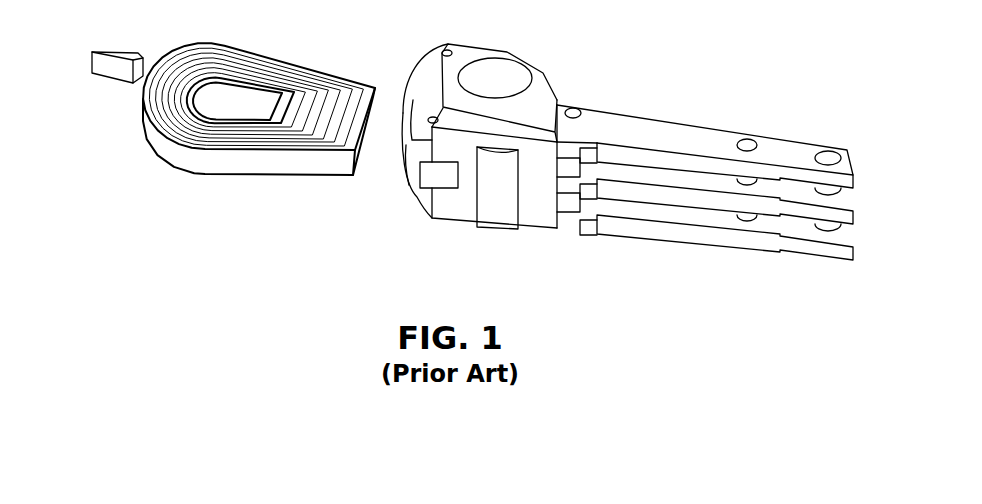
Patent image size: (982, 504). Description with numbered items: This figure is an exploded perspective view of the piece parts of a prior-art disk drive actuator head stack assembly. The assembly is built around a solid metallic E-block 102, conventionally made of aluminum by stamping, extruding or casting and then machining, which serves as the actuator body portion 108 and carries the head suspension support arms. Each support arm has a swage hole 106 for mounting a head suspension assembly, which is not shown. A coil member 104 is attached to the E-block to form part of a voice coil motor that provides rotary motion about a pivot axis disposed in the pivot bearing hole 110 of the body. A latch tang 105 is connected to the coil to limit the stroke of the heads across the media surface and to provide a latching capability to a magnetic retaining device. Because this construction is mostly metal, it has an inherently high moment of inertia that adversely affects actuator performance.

The E-block 102 is at (853, 182).
The coil member 104 is at (245, 58).
The latch tang 105 is at (112, 78).
The swage hole 106 is at (829, 153).
The actuator body portion 108 is at (543, 232).
The pivot bearing hole 110 is at (497, 75).